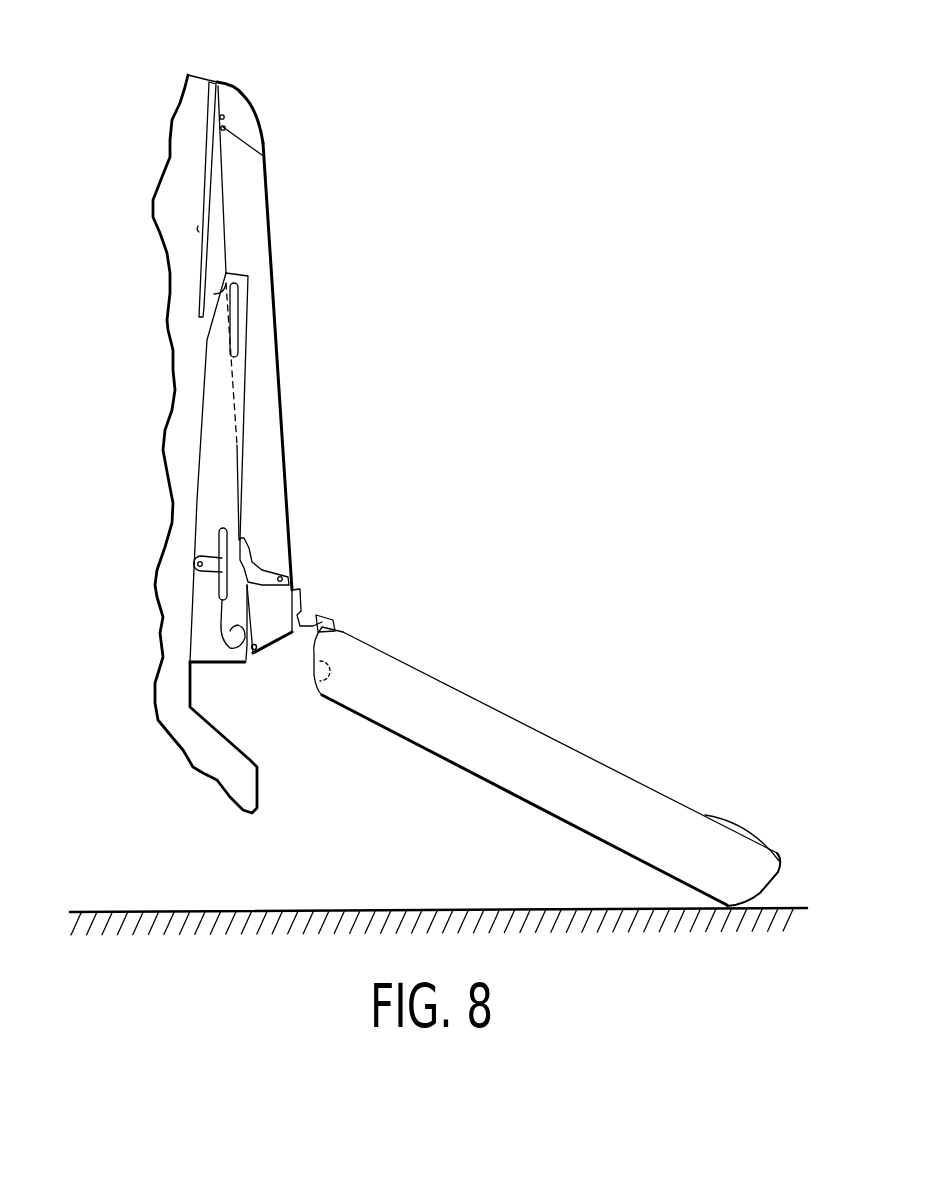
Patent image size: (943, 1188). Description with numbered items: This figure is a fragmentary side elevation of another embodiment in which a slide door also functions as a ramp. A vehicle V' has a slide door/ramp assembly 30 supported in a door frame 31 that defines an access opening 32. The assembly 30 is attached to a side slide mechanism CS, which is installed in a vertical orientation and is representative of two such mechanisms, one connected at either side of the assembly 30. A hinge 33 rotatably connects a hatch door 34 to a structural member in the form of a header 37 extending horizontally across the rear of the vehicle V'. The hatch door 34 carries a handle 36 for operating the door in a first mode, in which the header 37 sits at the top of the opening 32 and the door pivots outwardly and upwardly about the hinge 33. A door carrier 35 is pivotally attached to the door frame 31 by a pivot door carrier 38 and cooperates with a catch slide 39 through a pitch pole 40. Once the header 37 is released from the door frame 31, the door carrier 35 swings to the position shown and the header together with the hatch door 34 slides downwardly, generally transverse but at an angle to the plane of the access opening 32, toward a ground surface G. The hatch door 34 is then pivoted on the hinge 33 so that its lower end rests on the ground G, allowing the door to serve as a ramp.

The slide door/ramp assembly 30 is at (667, 571).
The door frame 31 is at (232, 108).
The access opening 32 is at (186, 207).
The hinge 33 is at (332, 627).
The hatch door 34 is at (560, 742).
The door carrier 35 is at (253, 234).
The handle 36 is at (718, 813).
The header 37 is at (265, 632).
The pivot door carrier 38 is at (226, 128).
The catch slide 39 is at (215, 430).
The pitch pole 40 is at (253, 565).
The side slide mechanism CS is at (162, 373).
The ground surface G is at (112, 912).
The vehicle V' is at (299, 330).